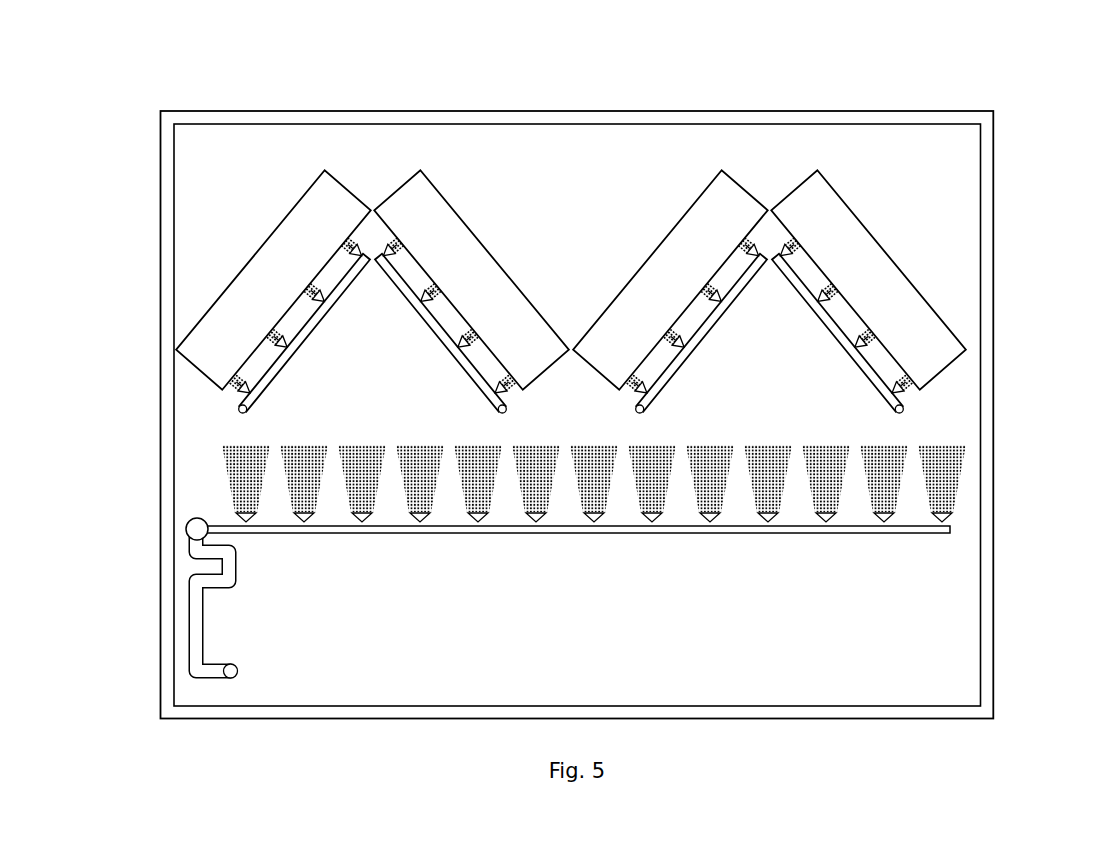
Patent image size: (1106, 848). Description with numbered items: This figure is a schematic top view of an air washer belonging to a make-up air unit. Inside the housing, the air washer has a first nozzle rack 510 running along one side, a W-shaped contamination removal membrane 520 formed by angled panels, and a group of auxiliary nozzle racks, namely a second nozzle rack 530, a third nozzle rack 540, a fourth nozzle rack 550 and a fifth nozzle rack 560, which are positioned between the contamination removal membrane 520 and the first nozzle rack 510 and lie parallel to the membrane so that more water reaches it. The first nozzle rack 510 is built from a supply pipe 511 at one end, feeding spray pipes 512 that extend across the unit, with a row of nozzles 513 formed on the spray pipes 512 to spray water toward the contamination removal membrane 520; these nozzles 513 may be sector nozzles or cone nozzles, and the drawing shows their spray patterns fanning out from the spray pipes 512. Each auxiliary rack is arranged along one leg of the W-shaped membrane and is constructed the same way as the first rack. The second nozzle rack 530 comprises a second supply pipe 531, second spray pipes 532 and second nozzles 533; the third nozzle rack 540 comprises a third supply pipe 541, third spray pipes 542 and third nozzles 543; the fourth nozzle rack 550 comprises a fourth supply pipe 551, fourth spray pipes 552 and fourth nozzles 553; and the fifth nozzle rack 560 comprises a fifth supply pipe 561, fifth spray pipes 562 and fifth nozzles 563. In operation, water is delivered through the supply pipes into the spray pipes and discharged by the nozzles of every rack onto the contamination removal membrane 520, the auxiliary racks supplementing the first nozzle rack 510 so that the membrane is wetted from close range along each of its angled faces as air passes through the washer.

The first nozzle rack 510 is at (653, 605).
The supply pipe 511 is at (199, 531).
The spray pipes 512 is at (738, 534).
The nozzles 513 is at (305, 522).
The contamination removal membrane 520 is at (848, 257).
The second nozzle rack 530 is at (842, 311).
The second supply pipe 531 is at (904, 411).
The second spray pipes 532 is at (877, 373).
The second nozzles 533 is at (792, 249).
The third nozzle rack 540 is at (682, 212).
The third supply pipe 541 is at (642, 410).
The third spray pipes 542 is at (650, 373).
The third nozzles 543 is at (709, 290).
The fourth nozzle rack 550 is at (440, 327).
The fourth supply pipe 551 is at (506, 410).
The fourth spray pipes 552 is at (398, 256).
The fourth nozzles 553 is at (466, 334).
The fifth nozzle rack 560 is at (225, 236).
The fifth supply pipe 561 is at (240, 410).
The fifth spray pipes 562 is at (253, 373).
The fifth nozzles 563 is at (311, 300).